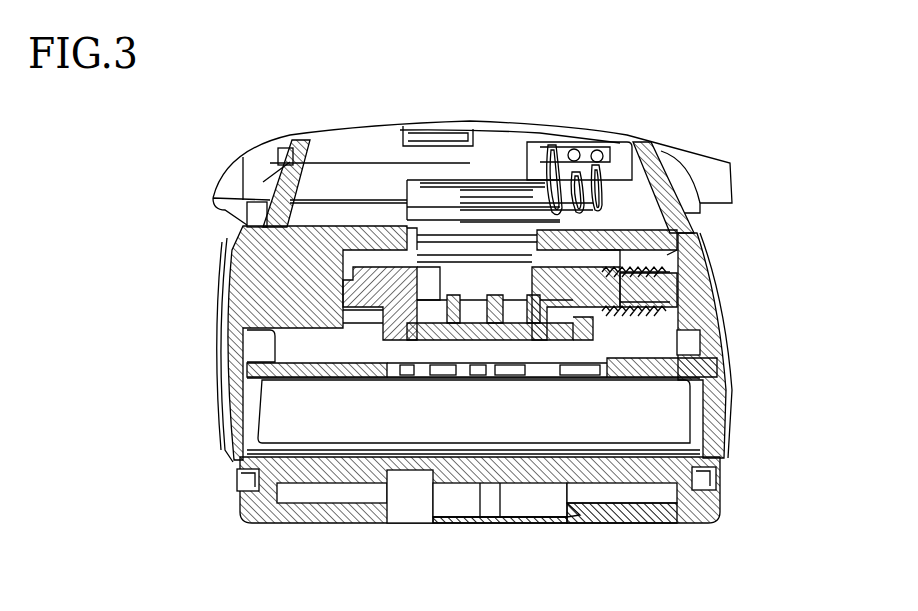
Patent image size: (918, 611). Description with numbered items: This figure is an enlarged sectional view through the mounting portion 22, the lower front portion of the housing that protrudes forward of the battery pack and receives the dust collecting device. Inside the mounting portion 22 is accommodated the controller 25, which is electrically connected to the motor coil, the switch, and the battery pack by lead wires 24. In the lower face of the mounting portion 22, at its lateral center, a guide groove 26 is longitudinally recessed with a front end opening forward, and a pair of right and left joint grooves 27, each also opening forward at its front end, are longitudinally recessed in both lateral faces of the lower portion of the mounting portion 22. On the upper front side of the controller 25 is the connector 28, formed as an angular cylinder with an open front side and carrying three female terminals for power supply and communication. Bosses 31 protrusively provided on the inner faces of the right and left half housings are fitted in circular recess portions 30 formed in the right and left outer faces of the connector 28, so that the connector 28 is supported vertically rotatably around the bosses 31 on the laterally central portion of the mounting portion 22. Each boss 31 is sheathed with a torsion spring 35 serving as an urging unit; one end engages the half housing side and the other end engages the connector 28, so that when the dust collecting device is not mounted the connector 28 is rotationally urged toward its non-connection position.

The mounting portion 22 is at (743, 373).
The lead wires 24 is at (518, 140).
The controller 25 is at (612, 432).
The guide groove 26 is at (553, 525).
The joint grooves 27 is at (234, 477).
The connector 28 is at (440, 335).
The circular recess portions 30 is at (387, 267).
The bosses 31 is at (385, 296).
The torsion spring 35 is at (693, 240).